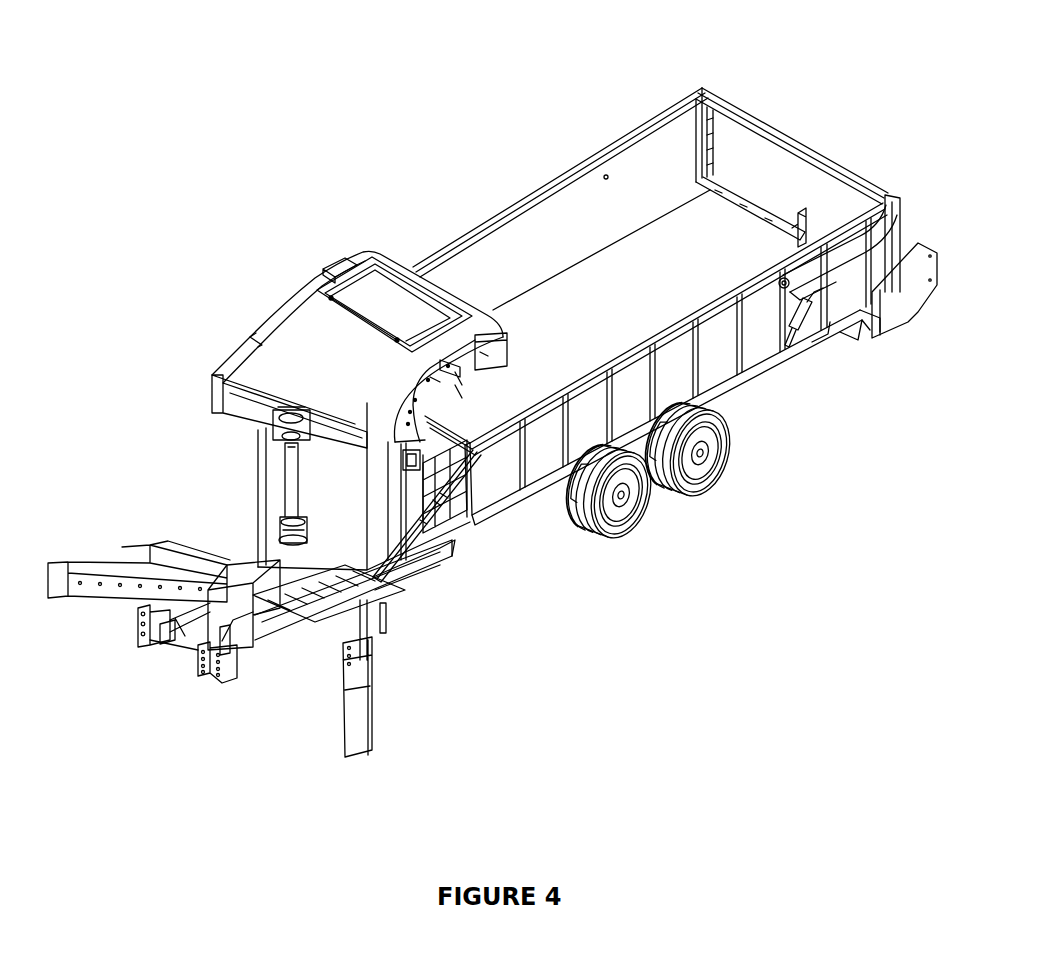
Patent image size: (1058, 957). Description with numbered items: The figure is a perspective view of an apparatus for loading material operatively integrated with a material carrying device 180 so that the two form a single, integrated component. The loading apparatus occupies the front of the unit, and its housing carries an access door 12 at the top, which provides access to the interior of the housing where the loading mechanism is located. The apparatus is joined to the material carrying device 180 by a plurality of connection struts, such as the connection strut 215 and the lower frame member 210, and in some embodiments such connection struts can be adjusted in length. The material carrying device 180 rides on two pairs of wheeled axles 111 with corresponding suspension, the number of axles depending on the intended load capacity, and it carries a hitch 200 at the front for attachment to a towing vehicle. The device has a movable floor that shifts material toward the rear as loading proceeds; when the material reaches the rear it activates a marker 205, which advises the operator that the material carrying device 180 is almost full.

The access door 12 is at (400, 312).
The wheeled axles 111 is at (660, 519).
The material carrying device 180 is at (675, 265).
The hitch 200 is at (213, 693).
The marker 205 is at (808, 205).
The tongue frame member 210 is at (432, 513).
The connection strut 215 is at (403, 443).